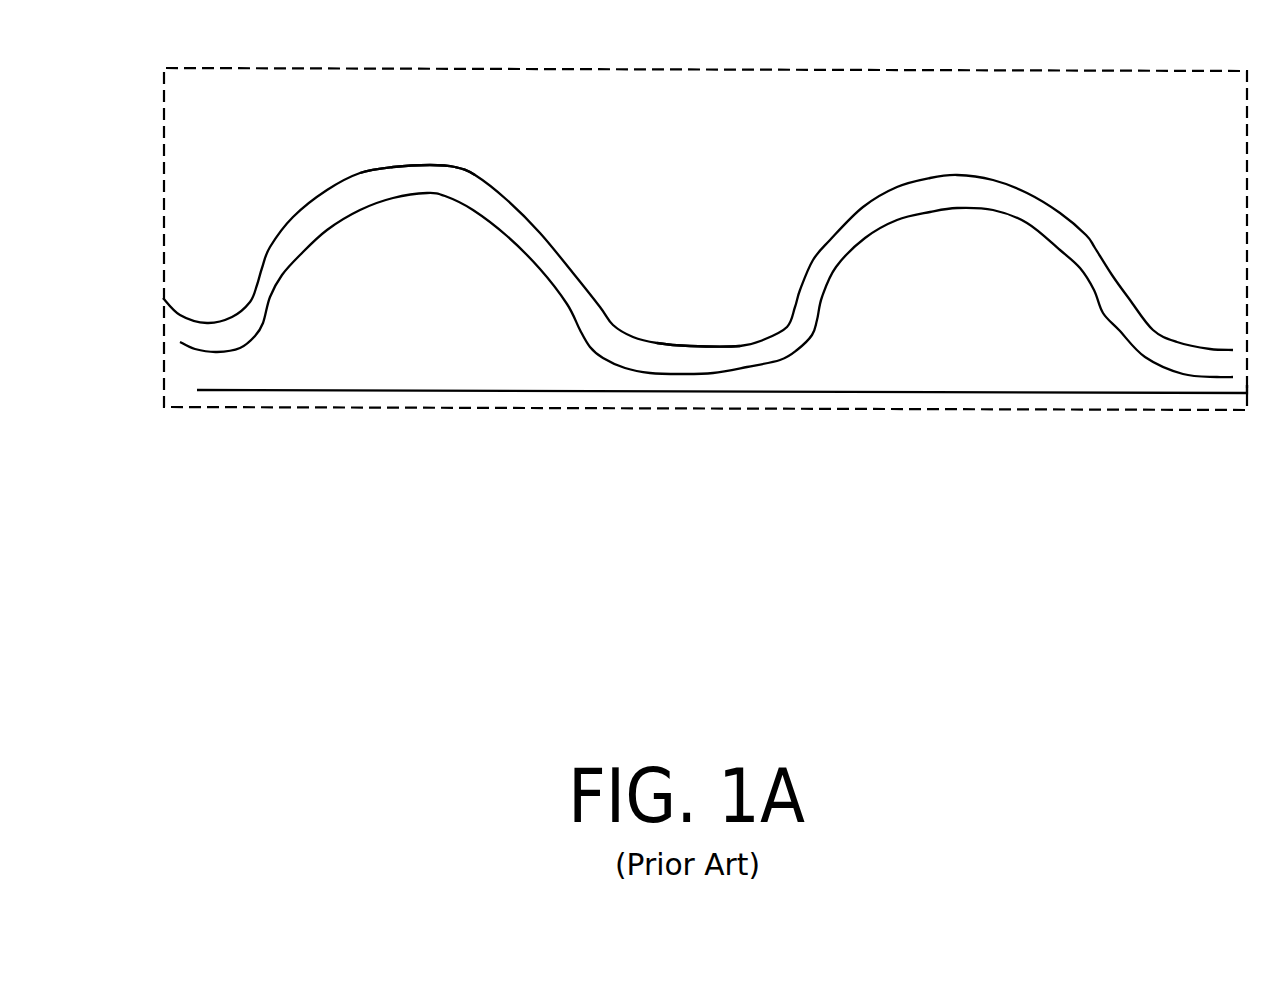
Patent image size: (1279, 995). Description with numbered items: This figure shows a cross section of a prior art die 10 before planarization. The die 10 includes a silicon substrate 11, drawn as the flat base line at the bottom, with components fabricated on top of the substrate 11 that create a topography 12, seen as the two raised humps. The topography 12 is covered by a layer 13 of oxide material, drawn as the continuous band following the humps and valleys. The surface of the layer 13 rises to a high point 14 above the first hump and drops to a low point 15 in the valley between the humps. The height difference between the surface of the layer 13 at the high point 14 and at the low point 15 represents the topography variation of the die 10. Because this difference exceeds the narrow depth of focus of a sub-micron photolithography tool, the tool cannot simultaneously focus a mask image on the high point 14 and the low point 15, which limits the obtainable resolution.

The die 10 is at (678, 138).
The silicon substrate 11 is at (785, 392).
The topography 12 is at (393, 260).
The layer of oxide material 13 is at (1155, 331).
The high point 14 is at (411, 167).
The low point 15 is at (701, 345).